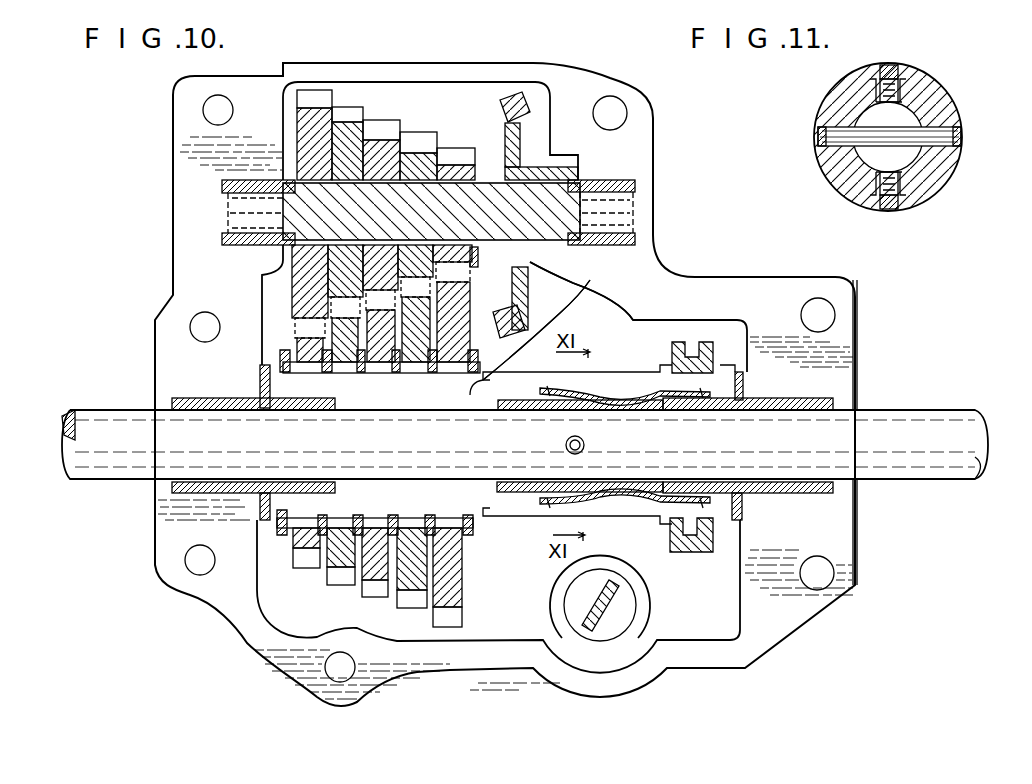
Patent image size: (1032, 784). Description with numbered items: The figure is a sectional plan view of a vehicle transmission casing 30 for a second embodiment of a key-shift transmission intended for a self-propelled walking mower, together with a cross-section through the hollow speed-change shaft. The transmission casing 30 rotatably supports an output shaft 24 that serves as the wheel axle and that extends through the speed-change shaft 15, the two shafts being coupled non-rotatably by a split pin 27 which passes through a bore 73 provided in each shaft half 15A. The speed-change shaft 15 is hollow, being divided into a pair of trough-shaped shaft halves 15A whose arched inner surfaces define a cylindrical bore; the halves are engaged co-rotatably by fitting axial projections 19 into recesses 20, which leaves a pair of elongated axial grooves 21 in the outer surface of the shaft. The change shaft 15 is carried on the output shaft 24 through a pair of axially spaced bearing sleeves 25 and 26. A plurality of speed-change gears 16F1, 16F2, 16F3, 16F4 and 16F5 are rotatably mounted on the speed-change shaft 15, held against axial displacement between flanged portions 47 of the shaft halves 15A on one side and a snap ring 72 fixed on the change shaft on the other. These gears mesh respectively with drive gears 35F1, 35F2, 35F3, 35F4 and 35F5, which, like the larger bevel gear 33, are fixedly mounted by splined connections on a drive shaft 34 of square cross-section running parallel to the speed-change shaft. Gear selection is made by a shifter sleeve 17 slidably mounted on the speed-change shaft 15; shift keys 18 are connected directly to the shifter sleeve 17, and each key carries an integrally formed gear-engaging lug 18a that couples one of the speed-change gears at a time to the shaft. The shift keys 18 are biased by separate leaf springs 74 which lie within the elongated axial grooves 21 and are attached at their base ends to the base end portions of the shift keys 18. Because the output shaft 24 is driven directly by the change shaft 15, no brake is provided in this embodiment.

In FIG. 10, the speed-change shaft 15 is at (276, 388).
In FIG. 11, the speed-change shaft 15 is at (931, 193).
In FIG. 10, the shaft half 15A is at (382, 385).
In FIG. 11, the shaft half 15A is at (945, 100).
In FIG. 10, the speed-change gear 16F1 is at (450, 617).
In FIG. 10, the speed-change gear 16F2 is at (407, 603).
In FIG. 10, the speed-change gear 16F3 is at (373, 588).
In FIG. 10, the speed-change gear 16F4 is at (337, 580).
In FIG. 10, the speed-change gear 16F5 is at (297, 570).
In FIG. 10, the shifter sleeve 17 is at (716, 345).
In FIG. 10, the shift key 18 is at (598, 385).
In FIG. 11, the shift key 18 is at (898, 68).
In FIG. 10, the gear-engaging lug 18a is at (560, 322).
In FIG. 10, the axial projection 19 is at (558, 398).
In FIG. 11, the axial projection 19 is at (898, 87).
In FIG. 11, the recess 20 is at (918, 106).
In FIG. 10, the elongated axial groove 21 is at (524, 397).
In FIG. 10, the output shaft 24 is at (822, 470).
In FIG. 11, the output shaft 24 is at (856, 170).
In FIG. 10, the bearing sleeve 25 is at (306, 408).
In FIG. 10, the bearing sleeve 26 is at (713, 482).
In FIG. 10, the split pin 27 is at (586, 444).
In FIG. 11, the split pin 27 is at (845, 105).
In FIG. 10, the transmission casing 30 is at (535, 648).
In FIG. 10, the bevel gear 33 is at (525, 100).
In FIG. 10, the drive shaft 34 is at (555, 215).
In FIG. 10, the drive gear 35F1 is at (463, 153).
In FIG. 10, the drive gear 35F2 is at (420, 140).
In FIG. 10, the drive gear 35F3 is at (383, 130).
In FIG. 10, the drive gear 35F4 is at (352, 115).
In FIG. 10, the drive gear 35F5 is at (308, 96).
In FIG. 10, the flanged portion 47 is at (480, 360).
In FIG. 10, the snap ring 72 is at (285, 375).
In FIG. 11, the bore 73 is at (818, 137).
In FIG. 10, the leaf spring 74 is at (640, 385).
In FIG. 11, the leaf spring 74 is at (870, 82).